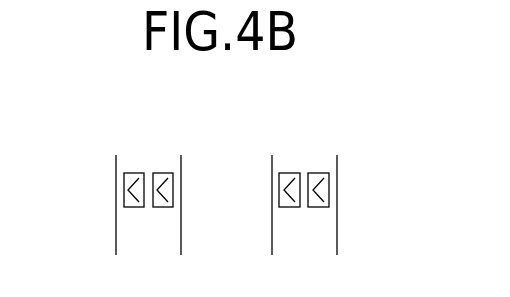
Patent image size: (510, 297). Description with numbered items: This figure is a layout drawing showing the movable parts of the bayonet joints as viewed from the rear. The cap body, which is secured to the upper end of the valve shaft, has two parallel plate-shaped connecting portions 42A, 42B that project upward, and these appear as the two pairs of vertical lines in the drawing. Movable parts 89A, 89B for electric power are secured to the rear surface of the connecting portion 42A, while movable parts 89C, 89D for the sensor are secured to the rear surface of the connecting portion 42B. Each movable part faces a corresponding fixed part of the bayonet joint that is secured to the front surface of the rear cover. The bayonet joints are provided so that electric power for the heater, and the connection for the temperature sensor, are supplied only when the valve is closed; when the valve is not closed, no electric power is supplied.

The connecting portion 42A is at (123, 238).
The connecting portion 42B is at (325, 237).
The movable part for electric power 89A is at (124, 200).
The movable part for electric power 89B is at (168, 190).
The movable part for sensor 89C is at (282, 198).
The movable part for sensor 89D is at (324, 190).